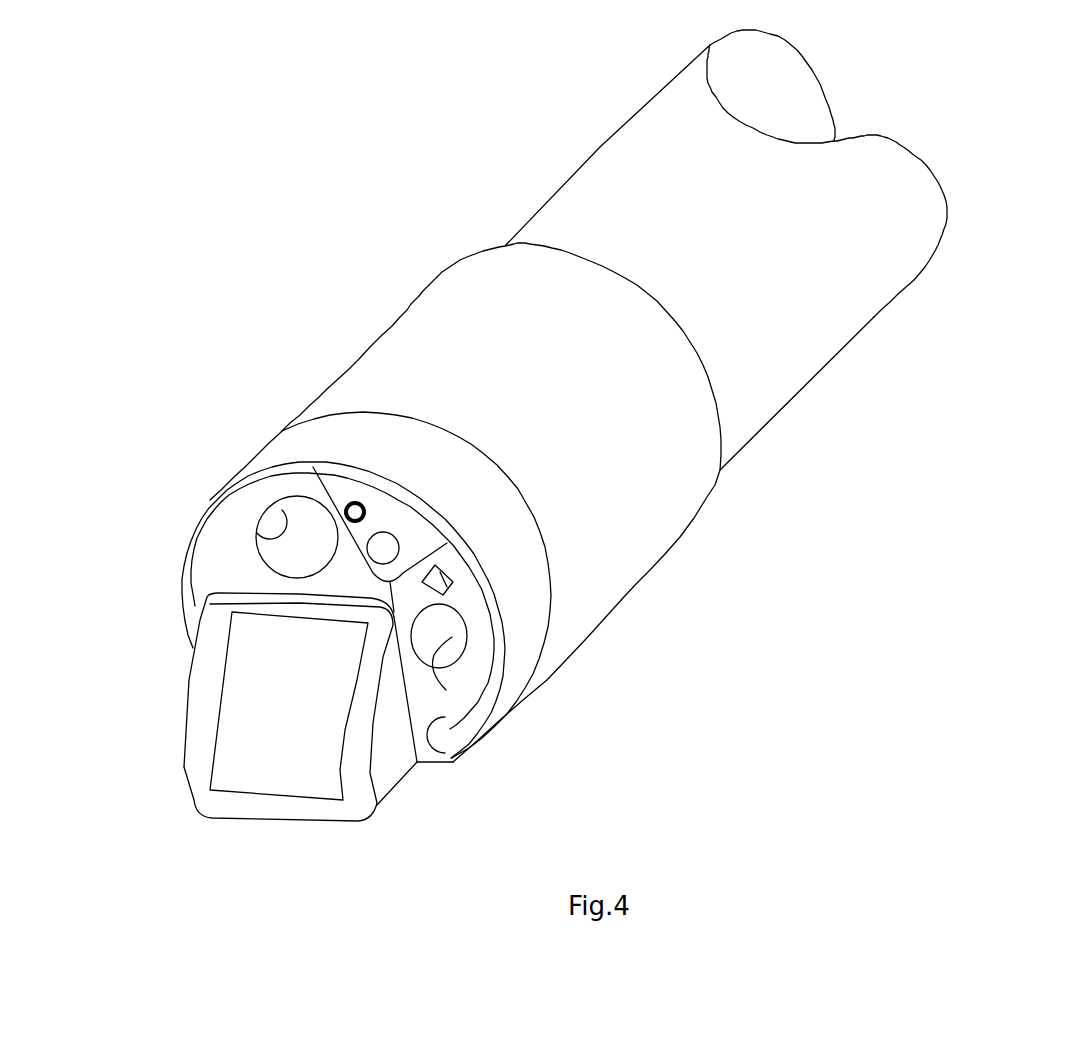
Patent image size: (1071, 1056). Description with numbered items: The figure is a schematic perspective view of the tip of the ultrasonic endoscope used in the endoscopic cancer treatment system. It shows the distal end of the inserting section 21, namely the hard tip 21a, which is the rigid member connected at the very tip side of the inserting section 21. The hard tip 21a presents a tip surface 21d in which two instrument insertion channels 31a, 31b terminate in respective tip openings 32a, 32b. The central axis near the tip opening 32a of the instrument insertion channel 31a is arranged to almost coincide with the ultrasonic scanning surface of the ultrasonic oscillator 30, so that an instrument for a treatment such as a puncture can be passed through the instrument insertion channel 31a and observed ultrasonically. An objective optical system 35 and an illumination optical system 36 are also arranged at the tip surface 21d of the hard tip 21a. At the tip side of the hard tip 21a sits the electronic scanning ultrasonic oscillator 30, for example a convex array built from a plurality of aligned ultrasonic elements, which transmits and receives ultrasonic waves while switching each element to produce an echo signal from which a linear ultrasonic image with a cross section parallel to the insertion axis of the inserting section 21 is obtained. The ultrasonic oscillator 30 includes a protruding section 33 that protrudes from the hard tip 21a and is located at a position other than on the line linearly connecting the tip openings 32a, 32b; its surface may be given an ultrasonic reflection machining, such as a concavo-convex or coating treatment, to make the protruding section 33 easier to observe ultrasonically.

The inserting section 21 is at (606, 698).
The hard tip 21a is at (443, 347).
The tip surface 21d is at (453, 762).
The ultrasonic oscillator 30 is at (293, 687).
The instrument insertion channel 31a is at (262, 543).
The instrument insertion channel 31b is at (446, 690).
The tip opening 32a is at (268, 560).
The tip opening 32b is at (467, 636).
The protruding section 33 is at (390, 773).
The objective optical system 35 is at (387, 547).
The illumination optical system 36 is at (347, 500).